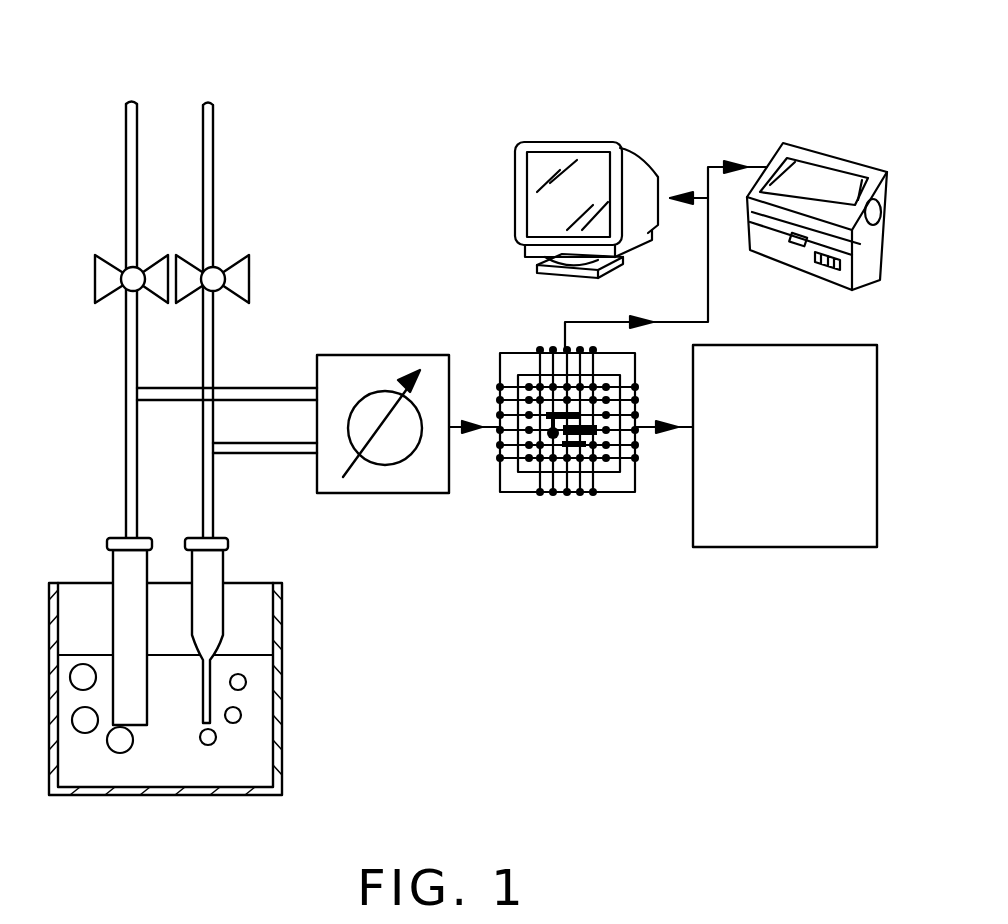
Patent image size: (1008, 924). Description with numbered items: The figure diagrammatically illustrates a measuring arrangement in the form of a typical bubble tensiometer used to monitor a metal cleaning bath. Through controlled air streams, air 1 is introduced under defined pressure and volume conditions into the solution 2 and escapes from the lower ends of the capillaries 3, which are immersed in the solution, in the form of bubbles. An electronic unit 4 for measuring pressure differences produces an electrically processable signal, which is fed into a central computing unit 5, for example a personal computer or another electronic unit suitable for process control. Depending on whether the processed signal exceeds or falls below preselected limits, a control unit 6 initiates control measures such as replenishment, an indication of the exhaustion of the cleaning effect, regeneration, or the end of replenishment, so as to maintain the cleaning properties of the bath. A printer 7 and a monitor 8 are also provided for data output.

The air 1 is at (147, 142).
The solution 2 is at (118, 795).
The capillaries 3 is at (135, 685).
The electronic unit 4 is at (390, 477).
The central computing unit 5 is at (520, 482).
The control unit 6 is at (725, 525).
The printer 7 is at (815, 150).
The monitor 8 is at (578, 145).